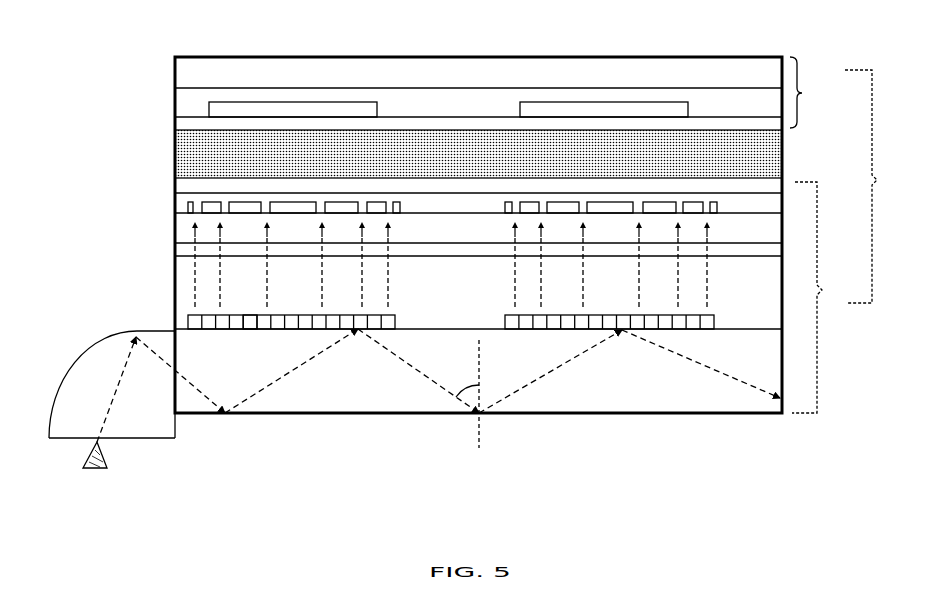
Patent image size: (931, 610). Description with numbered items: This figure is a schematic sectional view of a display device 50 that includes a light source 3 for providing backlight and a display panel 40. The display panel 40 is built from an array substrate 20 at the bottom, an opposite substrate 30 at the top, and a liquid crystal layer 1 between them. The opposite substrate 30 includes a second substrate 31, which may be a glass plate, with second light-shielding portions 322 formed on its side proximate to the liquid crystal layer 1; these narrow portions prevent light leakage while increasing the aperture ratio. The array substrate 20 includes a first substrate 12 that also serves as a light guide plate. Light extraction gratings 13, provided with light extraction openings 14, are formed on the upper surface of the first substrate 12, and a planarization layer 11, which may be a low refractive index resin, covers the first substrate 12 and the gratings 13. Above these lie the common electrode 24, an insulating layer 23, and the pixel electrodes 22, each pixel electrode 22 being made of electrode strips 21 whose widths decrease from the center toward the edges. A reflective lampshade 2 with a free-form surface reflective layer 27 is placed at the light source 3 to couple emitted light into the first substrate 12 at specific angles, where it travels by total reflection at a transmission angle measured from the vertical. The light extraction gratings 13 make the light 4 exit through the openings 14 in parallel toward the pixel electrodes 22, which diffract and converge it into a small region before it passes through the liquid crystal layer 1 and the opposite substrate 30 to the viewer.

The display device 50 is at (31, 46).
The display panel 40 is at (871, 186).
The opposite substrate 30 is at (808, 92).
The second substrate 31 is at (720, 72).
The second light-shielding portion 322 is at (253, 105).
The liquid crystal layer 1 is at (713, 162).
The electrode strip 21 is at (227, 200).
The pixel electrode 22 is at (190, 203).
The insulating layer 23 is at (192, 230).
The common electrode 24 is at (182, 253).
The light 4 is at (542, 282).
The planarization layer 11 is at (753, 305).
The light extraction grating 13 is at (190, 320).
The light extraction opening 14 is at (248, 313).
The first substrate 12 is at (757, 373).
The array substrate 20 is at (819, 297).
The reflective lampshade 2 is at (78, 370).
The light source 3 is at (107, 463).
The free-form surface reflective layer 27 is at (92, 357).